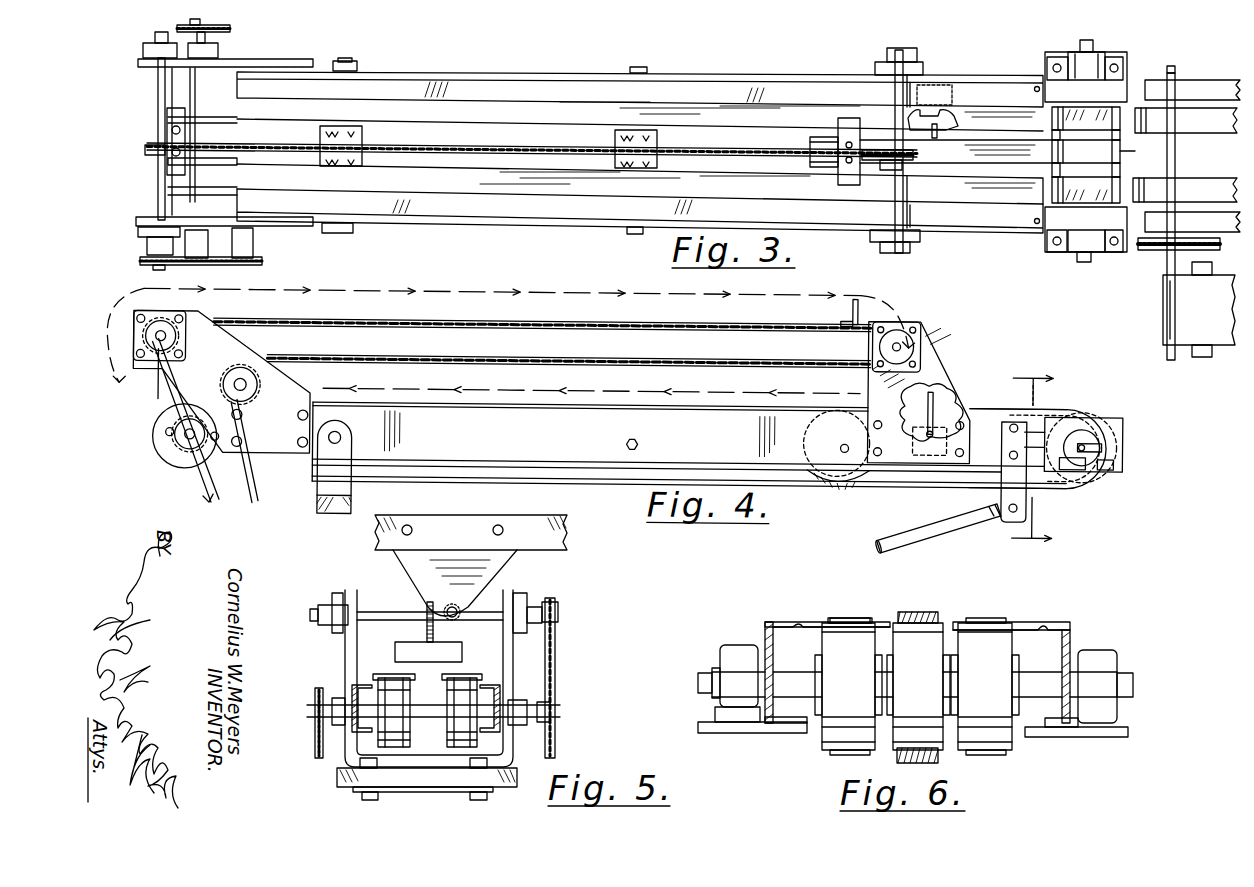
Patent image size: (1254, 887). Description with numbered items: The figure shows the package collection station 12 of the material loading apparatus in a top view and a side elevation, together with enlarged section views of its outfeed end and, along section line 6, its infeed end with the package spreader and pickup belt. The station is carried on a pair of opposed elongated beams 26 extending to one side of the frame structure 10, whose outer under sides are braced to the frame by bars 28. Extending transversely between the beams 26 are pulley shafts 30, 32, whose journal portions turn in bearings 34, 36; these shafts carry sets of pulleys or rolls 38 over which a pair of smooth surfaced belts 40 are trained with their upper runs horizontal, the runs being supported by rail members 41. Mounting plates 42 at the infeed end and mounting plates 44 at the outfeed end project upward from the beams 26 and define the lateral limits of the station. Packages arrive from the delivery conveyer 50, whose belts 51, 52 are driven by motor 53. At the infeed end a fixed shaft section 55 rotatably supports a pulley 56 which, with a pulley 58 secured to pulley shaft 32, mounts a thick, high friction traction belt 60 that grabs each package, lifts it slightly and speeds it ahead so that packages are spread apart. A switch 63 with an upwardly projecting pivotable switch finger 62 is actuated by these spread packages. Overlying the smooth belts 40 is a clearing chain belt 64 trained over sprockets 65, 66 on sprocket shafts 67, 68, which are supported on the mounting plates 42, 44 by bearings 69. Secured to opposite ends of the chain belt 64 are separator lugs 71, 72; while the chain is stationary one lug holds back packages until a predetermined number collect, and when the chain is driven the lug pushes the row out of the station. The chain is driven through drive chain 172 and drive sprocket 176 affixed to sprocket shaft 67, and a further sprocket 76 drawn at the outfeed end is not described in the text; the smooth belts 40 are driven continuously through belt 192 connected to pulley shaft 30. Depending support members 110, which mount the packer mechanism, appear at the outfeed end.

In FIG. 3, the frame structure 10 is at (582, 228).
In FIG. 4, the frame structure 10 is at (931, 562).
In FIG. 3, the package collection station 12 is at (444, 278).
In FIG. 4, the package collection station 12 is at (454, 274).
In FIG. 3, the elongated beams 26 is at (1118, 248).
In FIG. 4, the elongated beams 26 is at (1118, 410).
In FIG. 5, the elongated beams 26 is at (496, 684).
In FIG. 6, the elongated beams 26 is at (1070, 630).
In FIG. 4, the bars 28 is at (933, 530).
In FIG. 3, the pulley shaft 30 is at (214, 162).
In FIG. 4, the pulley shaft 30 is at (180, 440).
In FIG. 5, the pulley shaft 30 is at (561, 710).
In FIG. 3, the pulley shaft 32 is at (1090, 41).
In FIG. 4, the pulley shaft 32 is at (1102, 438).
In FIG. 6, the pulley shaft 32 is at (1135, 676).
In FIG. 3, the bearing 34 is at (224, 246).
In FIG. 3, the bearing 36 is at (1063, 253).
In FIG. 4, the bearing 36 is at (1128, 446).
In FIG. 6, the bearing 36 is at (1117, 651).
In FIG. 3, the pulleys or rolls 38 is at (1052, 204).
In FIG. 4, the pulleys or rolls 38 is at (1076, 486).
In FIG. 5, the pulleys or rolls 38 is at (450, 738).
In FIG. 6, the pulleys or rolls 38 is at (1010, 750).
In FIG. 3, the smooth surfaced belts 40 is at (518, 209).
In FIG. 4, the smooth surfaced belts 40 is at (794, 480).
In FIG. 5, the smooth surfaced belts 40 is at (458, 678).
In FIG. 6, the smooth surfaced belts 40 is at (1004, 618).
In FIG. 3, the rail members 41 is at (954, 130).
In FIG. 6, the rail members 41 is at (1052, 618).
In FIG. 3, the mounting plates 42 is at (928, 238).
In FIG. 4, the mounting plates 42 is at (865, 394).
In FIG. 3, the mounting plates 44 is at (310, 242).
In FIG. 4, the mounting plates 44 is at (303, 402).
In FIG. 3, the delivery conveyer 50 is at (1212, 66).
In FIG. 3, the belt 51 is at (1220, 130).
In FIG. 3, the belt 52 is at (1217, 186).
In FIG. 3, the motor 53 is at (1162, 314).
In FIG. 4, the fixed shaft section 55 is at (840, 446).
In FIG. 3, the pulley or roll 56 is at (816, 168).
In FIG. 4, the pulley or roll 56 is at (851, 476).
In FIG. 3, the pulley 58 is at (1121, 150).
In FIG. 6, the pulley 58 is at (914, 684).
In FIG. 3, the traction belt 60 is at (1123, 160).
In FIG. 4, the traction belt 60 is at (1072, 402).
In FIG. 6, the traction belt 60 is at (900, 764).
In FIG. 3, the switch finger 62 is at (938, 138).
In FIG. 4, the switch finger 62 is at (935, 387).
In FIG. 3, the switch 63 is at (960, 114).
In FIG. 4, the switch 63 is at (950, 410).
In FIG. 3, the chain belt 64 is at (476, 142).
In FIG. 4, the chain belt 64 is at (496, 333).
In FIG. 3, the sprocket 65 is at (142, 160).
In FIG. 3, the sprocket 66 is at (900, 166).
In FIG. 3, the sprocket shaft 67 is at (156, 100).
In FIG. 4, the sprocket shaft 67 is at (161, 330).
In FIG. 5, the sprocket shaft 67 is at (308, 608).
In FIG. 3, the sprocket shaft 68 is at (901, 209).
In FIG. 3, the bearings 69 is at (880, 246).
In FIG. 4, the bearings 69 is at (878, 348).
In FIG. 5, the bearings 69 is at (528, 592).
In FIG. 3, the separator lug 71 is at (185, 116).
In FIG. 4, the separator lug 71 is at (159, 387).
In FIG. 5, the separator lug 71 is at (394, 650).
In FIG. 3, the separator lug 72 is at (838, 120).
In FIG. 4, the separator lug 72 is at (846, 302).
In FIG. 4, the sprocket 76 is at (176, 344).
In FIG. 5, the sprocket 76 is at (546, 602).
In FIG. 5, the depending support members 110 is at (397, 560).
In FIG. 4, the drive chain 172 is at (214, 506).
In FIG. 5, the drive chain 172 is at (556, 658).
In FIG. 3, the drive sprocket 176 is at (140, 259).
In FIG. 3, the belt 192 is at (231, 22).
In FIG. 5, the belt 192 is at (314, 760).
In FIG. 4, the section line 6- 6 is at (1021, 460).